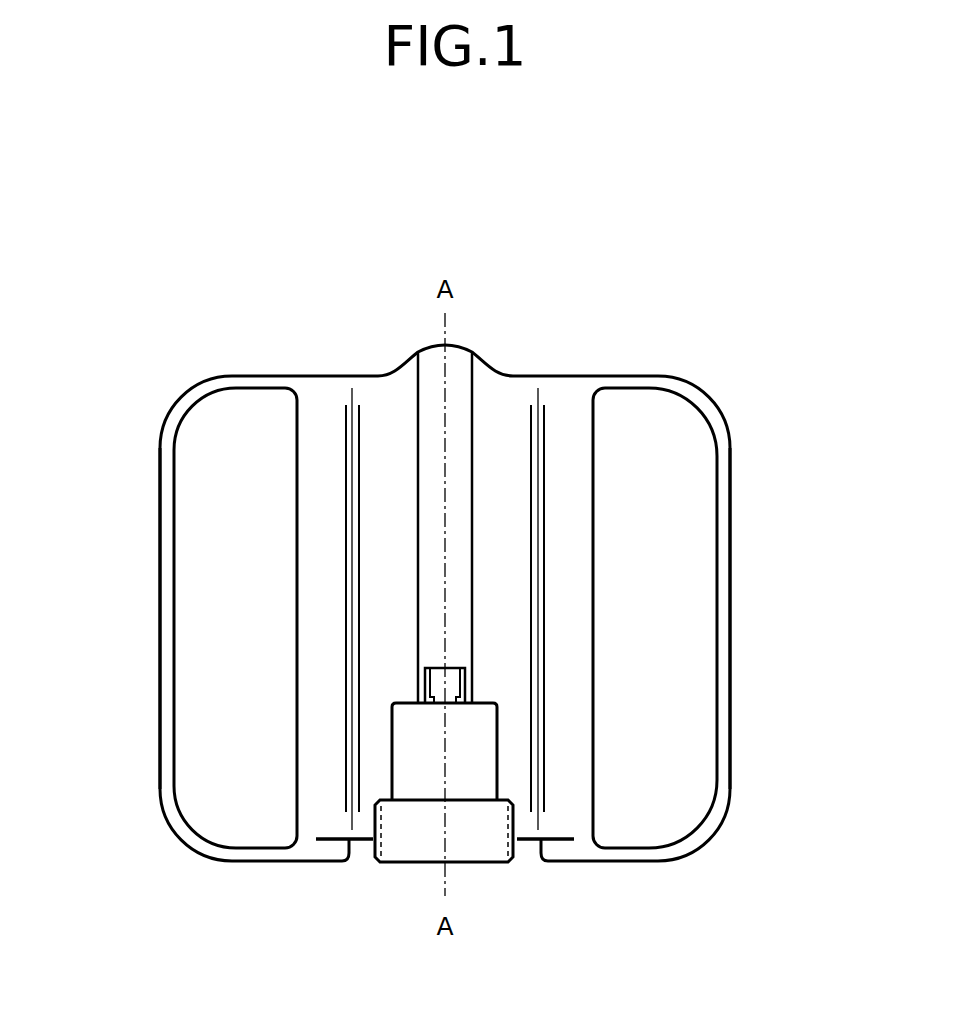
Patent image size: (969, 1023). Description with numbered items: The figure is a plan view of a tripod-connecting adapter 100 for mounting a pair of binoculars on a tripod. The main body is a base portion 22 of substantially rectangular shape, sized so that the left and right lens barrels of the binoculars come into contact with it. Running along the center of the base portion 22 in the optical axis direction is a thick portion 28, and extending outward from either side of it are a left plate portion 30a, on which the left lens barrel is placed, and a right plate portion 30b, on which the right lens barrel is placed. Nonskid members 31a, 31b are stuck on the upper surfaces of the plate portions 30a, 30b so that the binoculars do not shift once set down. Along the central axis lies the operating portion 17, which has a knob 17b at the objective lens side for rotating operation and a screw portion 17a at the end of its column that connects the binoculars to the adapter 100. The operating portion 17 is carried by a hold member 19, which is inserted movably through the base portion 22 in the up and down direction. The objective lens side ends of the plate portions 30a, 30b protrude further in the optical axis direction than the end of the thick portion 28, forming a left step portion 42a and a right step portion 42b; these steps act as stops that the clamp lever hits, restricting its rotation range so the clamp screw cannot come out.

The tripod-connecting adapter 100 is at (637, 332).
The base portion 22 is at (320, 395).
The thick portion 28 is at (483, 380).
The left plate portion 30a is at (732, 535).
The right plate portion 30b is at (160, 545).
The nonskid member 31a is at (685, 480).
The nonskid member 31b is at (200, 447).
The operating portion 17 is at (418, 870).
The screw portion 17a is at (455, 683).
The knob 17b is at (490, 820).
The hold member 19 is at (482, 746).
The left step portion 42a is at (541, 850).
The right step portion 42b is at (349, 850).